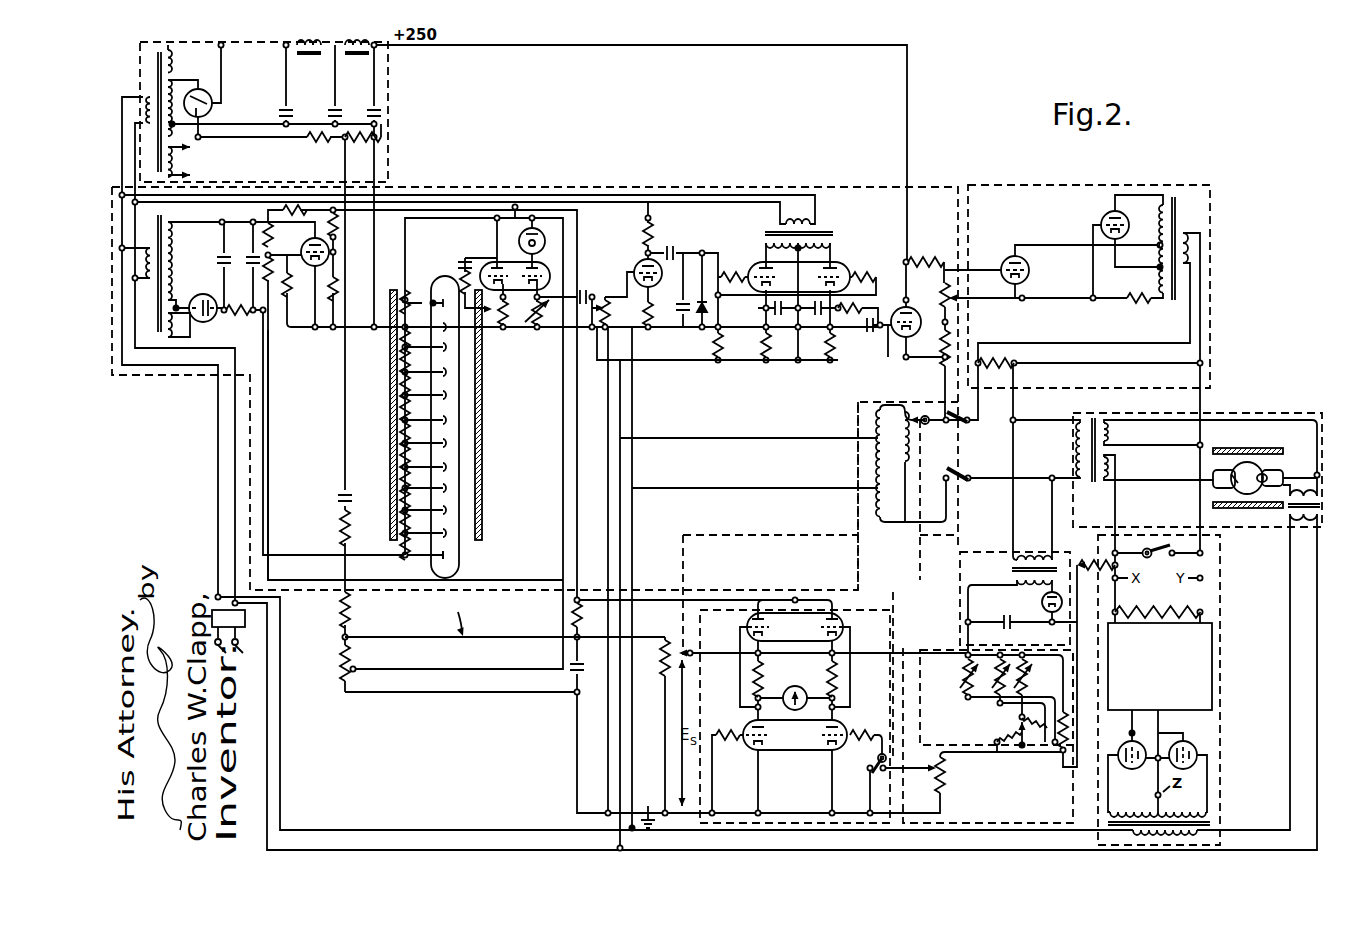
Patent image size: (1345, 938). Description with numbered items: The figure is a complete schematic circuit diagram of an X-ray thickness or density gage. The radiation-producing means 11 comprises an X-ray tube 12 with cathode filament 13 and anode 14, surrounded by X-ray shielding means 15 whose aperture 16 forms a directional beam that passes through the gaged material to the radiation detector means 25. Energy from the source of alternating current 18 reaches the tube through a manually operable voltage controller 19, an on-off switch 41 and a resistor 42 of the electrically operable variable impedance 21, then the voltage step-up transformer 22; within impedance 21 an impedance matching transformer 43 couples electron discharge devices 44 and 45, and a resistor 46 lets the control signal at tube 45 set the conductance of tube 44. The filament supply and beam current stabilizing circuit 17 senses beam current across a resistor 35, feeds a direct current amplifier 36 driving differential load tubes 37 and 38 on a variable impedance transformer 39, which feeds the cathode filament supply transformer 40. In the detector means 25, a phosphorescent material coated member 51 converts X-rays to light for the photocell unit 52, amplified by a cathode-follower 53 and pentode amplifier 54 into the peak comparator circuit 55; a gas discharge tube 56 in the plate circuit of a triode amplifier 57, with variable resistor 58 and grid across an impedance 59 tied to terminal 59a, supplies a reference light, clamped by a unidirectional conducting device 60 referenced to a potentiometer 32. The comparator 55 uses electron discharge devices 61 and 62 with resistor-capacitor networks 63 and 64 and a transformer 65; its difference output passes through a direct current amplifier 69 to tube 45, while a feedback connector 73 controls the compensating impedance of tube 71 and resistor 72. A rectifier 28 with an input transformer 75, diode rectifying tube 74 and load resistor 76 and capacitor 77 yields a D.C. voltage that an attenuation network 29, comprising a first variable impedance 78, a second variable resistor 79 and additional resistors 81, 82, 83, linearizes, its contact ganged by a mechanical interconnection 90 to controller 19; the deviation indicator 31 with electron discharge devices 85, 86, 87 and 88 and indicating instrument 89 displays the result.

The terminal of the secondary winding 59a is at (203, 117).
The radiation detector means 25 is at (602, 187).
The electron discharge device 71 is at (318, 268).
The resistor 72 is at (290, 293).
The feedback connector 73 is at (268, 397).
The gas discharge tube 56 is at (522, 235).
The cathode-follower 53 is at (486, 257).
The triode amplifier 57 is at (546, 258).
The variable resistor 58 is at (537, 325).
The pentode amplifier 54 is at (632, 262).
The phosphorescent material coated member 51 is at (482, 460).
The photocell unit 52 is at (462, 555).
The electron discharge device 62 is at (752, 268).
The transformer 65 is at (834, 233).
The peak comparator circuit 55 is at (845, 260).
The electron discharge device 61 is at (840, 272).
The parallel resistor-capacitor network 64 is at (823, 322).
The parallel resistor-capacitor network 63 is at (820, 345).
The direct current amplifier 69 is at (892, 312).
The electron discharge device 44 is at (1103, 216).
The electron discharge device 45 is at (1003, 260).
The resistor 46 is at (1125, 296).
The impedance matching transformer 43 is at (1178, 225).
The electrically operable variable impedance 21 is at (1210, 290).
The resistor 42 is at (990, 368).
The manually operable voltage controller 19 is at (925, 415).
The on-off switch 41 is at (964, 430).
The mechanical interconnection 90 is at (920, 535).
The voltage step-up transformer 22 is at (1090, 482).
The radiation-producing means 11 is at (1280, 413).
The aperture 16 is at (1243, 448).
The X-ray shielding means 15 is at (1240, 515).
The X-ray tube 12 is at (1235, 468).
The cathode filament 13 is at (1272, 470).
The anode 14 is at (1230, 490).
The cathode filament supply transformer 40 is at (1290, 512).
The input transformer 75 is at (1012, 568).
The capacitor 77 is at (1007, 614).
The diode rectifying tube 74 is at (1062, 602).
The rectifier 28 is at (960, 585).
The attenuation network 29 is at (948, 650).
The additional resistor 83 is at (968, 672).
The additional resistor 82 is at (995, 664).
The first additional impedance 81 is at (1028, 676).
The first variable impedance 78 is at (996, 735).
The resistor 76 is at (1062, 755).
The second variable resistor 79 is at (935, 762).
The resistor 35 is at (1158, 605).
The direct current amplifier 36 is at (1212, 666).
The differential load tube 37 is at (1122, 745).
The differential load tube 38 is at (1190, 742).
The filament supply and beam current stabilizing circuit 17 is at (1220, 730).
The variable impedance transformer 39 is at (1212, 824).
The deviation indicator 31 is at (876, 610).
The electron discharge device 87 is at (747, 620).
The electron discharge device 88 is at (843, 620).
The indicating instrument 89 is at (795, 686).
The electron discharge device 85 is at (745, 725).
The electron discharge device 86 is at (846, 725).
The potentiometer 32 is at (672, 625).
The unidirectional conducting device 60 is at (462, 633).
The impedance 59 is at (340, 655).
The source of alternating current 18 is at (244, 652).